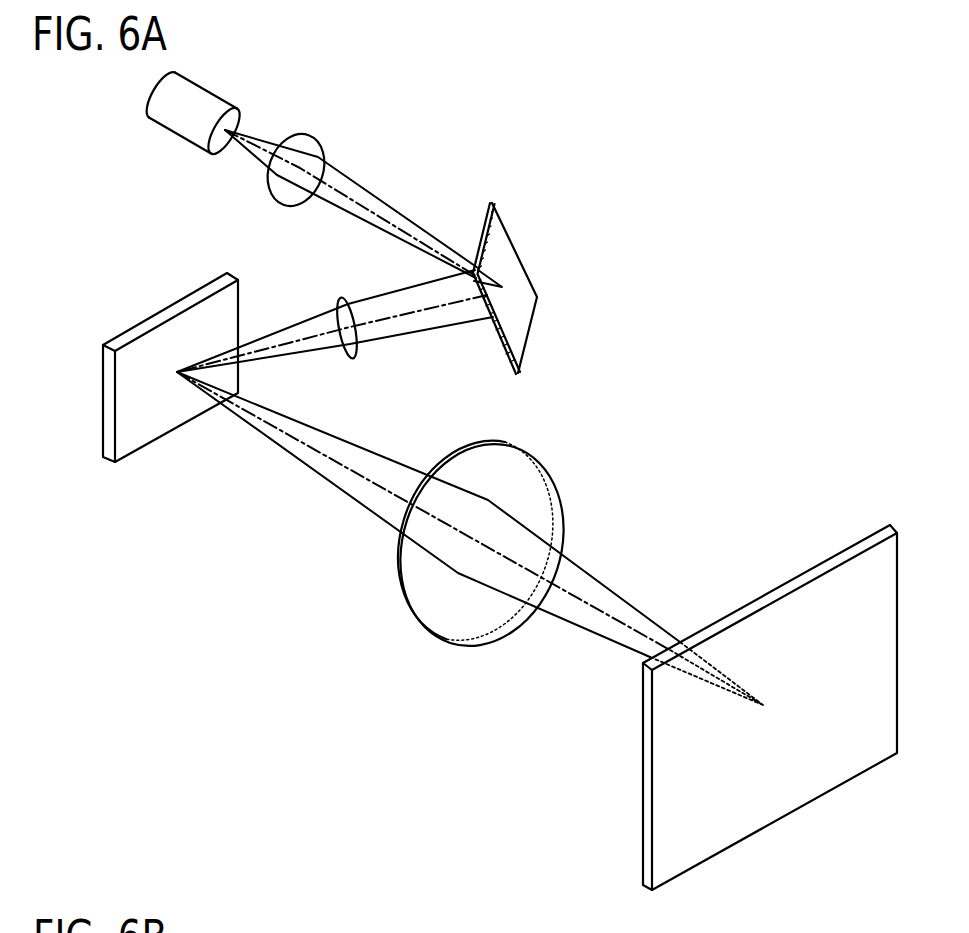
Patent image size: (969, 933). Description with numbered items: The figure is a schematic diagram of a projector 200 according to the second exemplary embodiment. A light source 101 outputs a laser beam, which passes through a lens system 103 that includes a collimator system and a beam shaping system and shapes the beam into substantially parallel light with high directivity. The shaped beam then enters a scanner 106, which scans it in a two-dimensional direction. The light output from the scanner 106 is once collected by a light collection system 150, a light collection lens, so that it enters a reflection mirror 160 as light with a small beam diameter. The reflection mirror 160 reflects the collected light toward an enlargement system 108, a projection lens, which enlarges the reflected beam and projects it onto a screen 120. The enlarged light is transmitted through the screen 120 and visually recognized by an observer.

The light source 101 is at (195, 98).
The lens system 103 is at (315, 131).
The scanner 106 is at (497, 238).
The light collection system 150 is at (362, 352).
The reflection mirror 160 is at (152, 322).
The enlargement system 108 is at (532, 480).
The screen 120 is at (753, 805).
The projector 200 is at (664, 230).